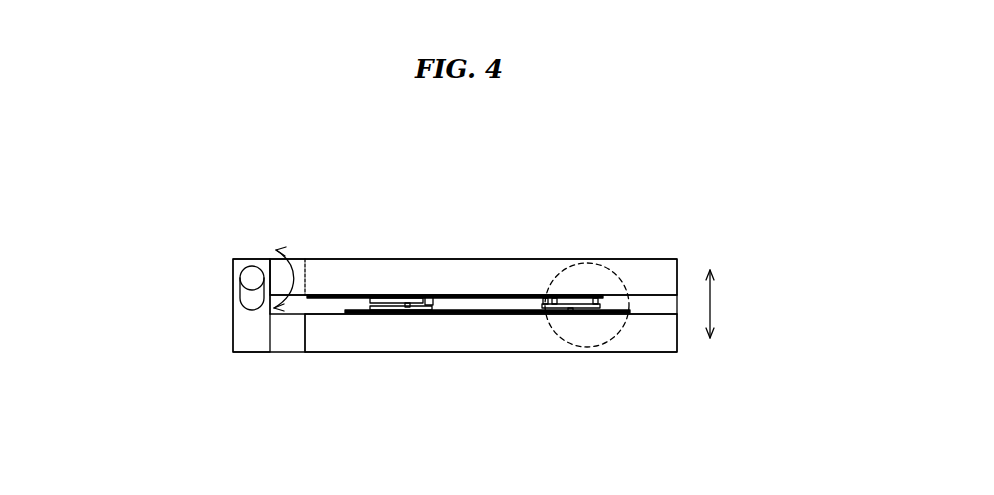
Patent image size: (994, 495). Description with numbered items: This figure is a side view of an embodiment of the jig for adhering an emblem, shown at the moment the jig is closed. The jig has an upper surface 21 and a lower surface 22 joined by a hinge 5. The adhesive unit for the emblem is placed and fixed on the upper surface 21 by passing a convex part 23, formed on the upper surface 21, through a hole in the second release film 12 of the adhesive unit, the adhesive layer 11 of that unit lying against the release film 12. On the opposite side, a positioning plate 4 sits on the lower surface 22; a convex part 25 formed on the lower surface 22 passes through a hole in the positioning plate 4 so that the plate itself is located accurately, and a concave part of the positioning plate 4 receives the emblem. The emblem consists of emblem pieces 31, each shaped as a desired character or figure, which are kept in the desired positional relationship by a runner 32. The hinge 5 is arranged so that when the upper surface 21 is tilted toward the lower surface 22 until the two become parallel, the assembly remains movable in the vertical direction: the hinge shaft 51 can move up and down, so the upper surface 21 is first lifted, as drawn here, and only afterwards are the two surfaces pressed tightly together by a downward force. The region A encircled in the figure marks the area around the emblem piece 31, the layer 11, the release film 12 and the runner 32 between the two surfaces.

The positioning plate 4 is at (460, 313).
The hinge 5 is at (222, 261).
The hinge shaft 51 is at (245, 282).
The electronic component 11 is at (584, 298).
The second release film 12 is at (490, 297).
The upper surface 21 is at (450, 268).
The lower surface 22 is at (520, 340).
The convex part 23 is at (428, 304).
The convex part 25 is at (412, 298).
The emblem piece 31 is at (571, 312).
The runner 32 is at (367, 303).
The region A is at (617, 334).